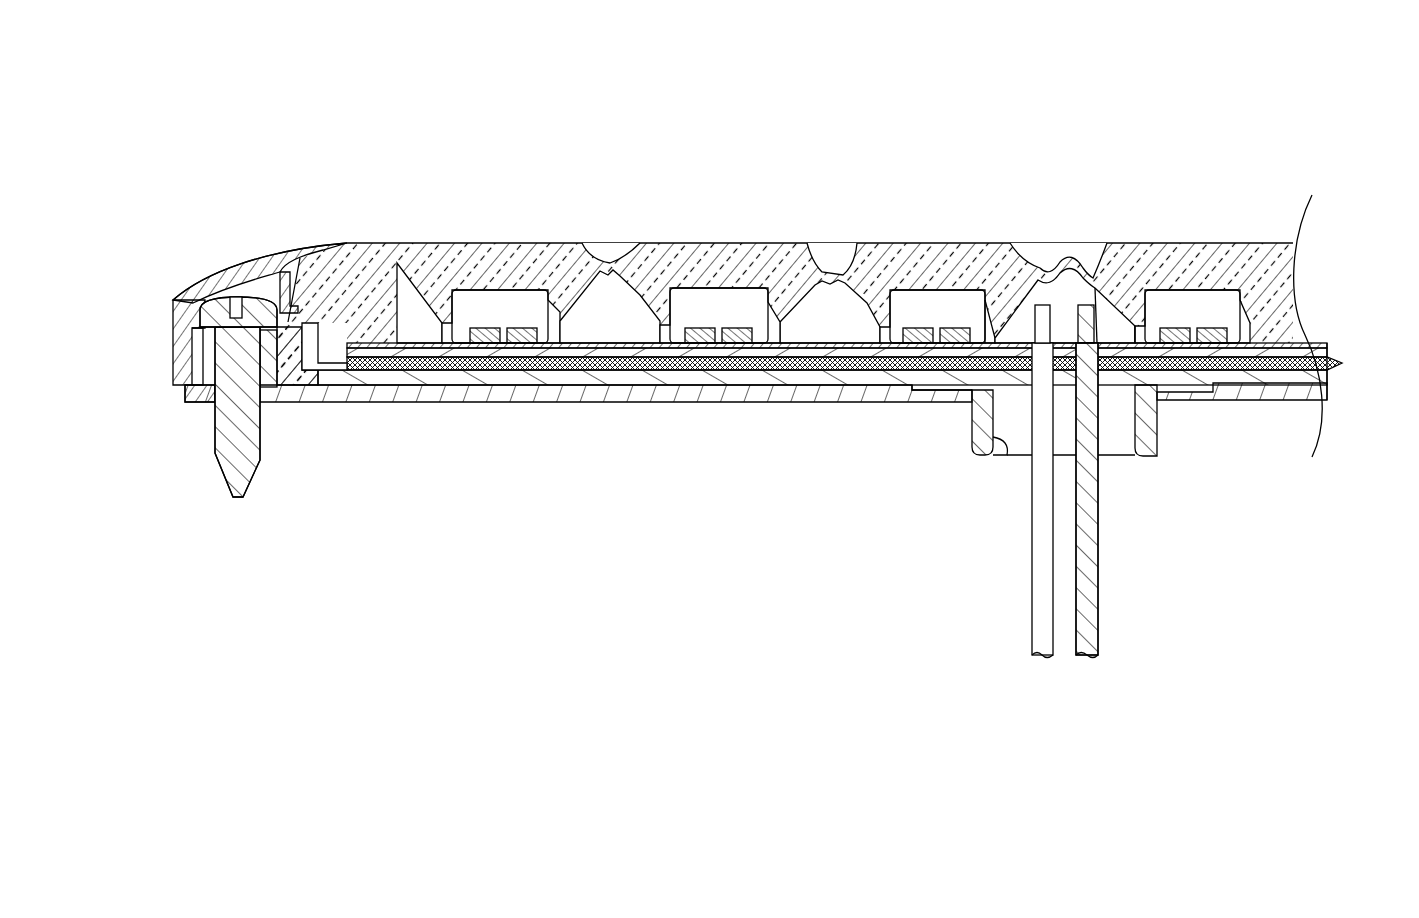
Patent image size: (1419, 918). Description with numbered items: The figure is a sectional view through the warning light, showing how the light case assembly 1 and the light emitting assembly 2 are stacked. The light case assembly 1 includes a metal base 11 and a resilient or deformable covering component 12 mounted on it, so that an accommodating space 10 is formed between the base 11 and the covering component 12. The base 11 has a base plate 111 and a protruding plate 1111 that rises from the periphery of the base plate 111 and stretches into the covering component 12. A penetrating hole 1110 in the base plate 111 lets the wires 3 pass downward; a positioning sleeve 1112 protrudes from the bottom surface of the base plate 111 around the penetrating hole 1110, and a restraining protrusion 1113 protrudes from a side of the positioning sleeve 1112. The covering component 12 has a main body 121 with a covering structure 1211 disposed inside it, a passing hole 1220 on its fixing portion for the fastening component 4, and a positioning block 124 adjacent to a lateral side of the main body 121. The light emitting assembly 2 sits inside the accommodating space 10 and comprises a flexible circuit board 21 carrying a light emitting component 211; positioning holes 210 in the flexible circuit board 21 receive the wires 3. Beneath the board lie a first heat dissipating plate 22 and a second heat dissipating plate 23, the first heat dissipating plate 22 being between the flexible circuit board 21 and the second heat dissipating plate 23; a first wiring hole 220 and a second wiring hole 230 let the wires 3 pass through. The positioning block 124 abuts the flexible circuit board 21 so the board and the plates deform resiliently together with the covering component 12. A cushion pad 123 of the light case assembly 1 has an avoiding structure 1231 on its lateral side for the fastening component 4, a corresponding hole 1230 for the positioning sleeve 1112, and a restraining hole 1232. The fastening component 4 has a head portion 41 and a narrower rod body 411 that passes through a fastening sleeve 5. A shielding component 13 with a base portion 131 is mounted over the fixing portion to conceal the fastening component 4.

The light case assembly 1 is at (498, 98).
The light emitting assembly 2 is at (1384, 286).
The wires 3 is at (1100, 580).
The fastening component 4 is at (142, 273).
The fastening sleeve 5 is at (203, 357).
The accommodating space 10 is at (416, 332).
The base 11 is at (380, 480).
The covering component 12 is at (498, 184).
The shielding component 13 is at (230, 176).
The flexible circuit board 21 is at (1283, 343).
The first heat dissipating plate 22 is at (1320, 353).
The second heat dissipating plate 23 is at (1336, 363).
The head portion 41 is at (203, 317).
The base plate 111 is at (380, 380).
The main body 121 is at (505, 246).
The cushion pad 123 is at (570, 393).
The positioning block 124 is at (335, 385).
The base portion 131 is at (256, 262).
The positioning hole 210 is at (1097, 346).
The light emitting component 211 is at (740, 338).
The first wiring hole 220 is at (985, 345).
The second wiring hole 230 is at (1138, 346).
The rod body 411 is at (230, 428).
The penetrating hole 1110 is at (1005, 440).
The protruding plate 1111 is at (349, 240).
The positioning sleeve 1112 is at (1157, 428).
The restraining protrusion 1113 is at (1193, 393).
The covering structure 1211 is at (845, 300).
The passing hole 1220 is at (192, 393).
The corresponding hole 1230 is at (970, 394).
The avoiding structure 1231 is at (278, 395).
The restraining hole 1232 is at (912, 396).